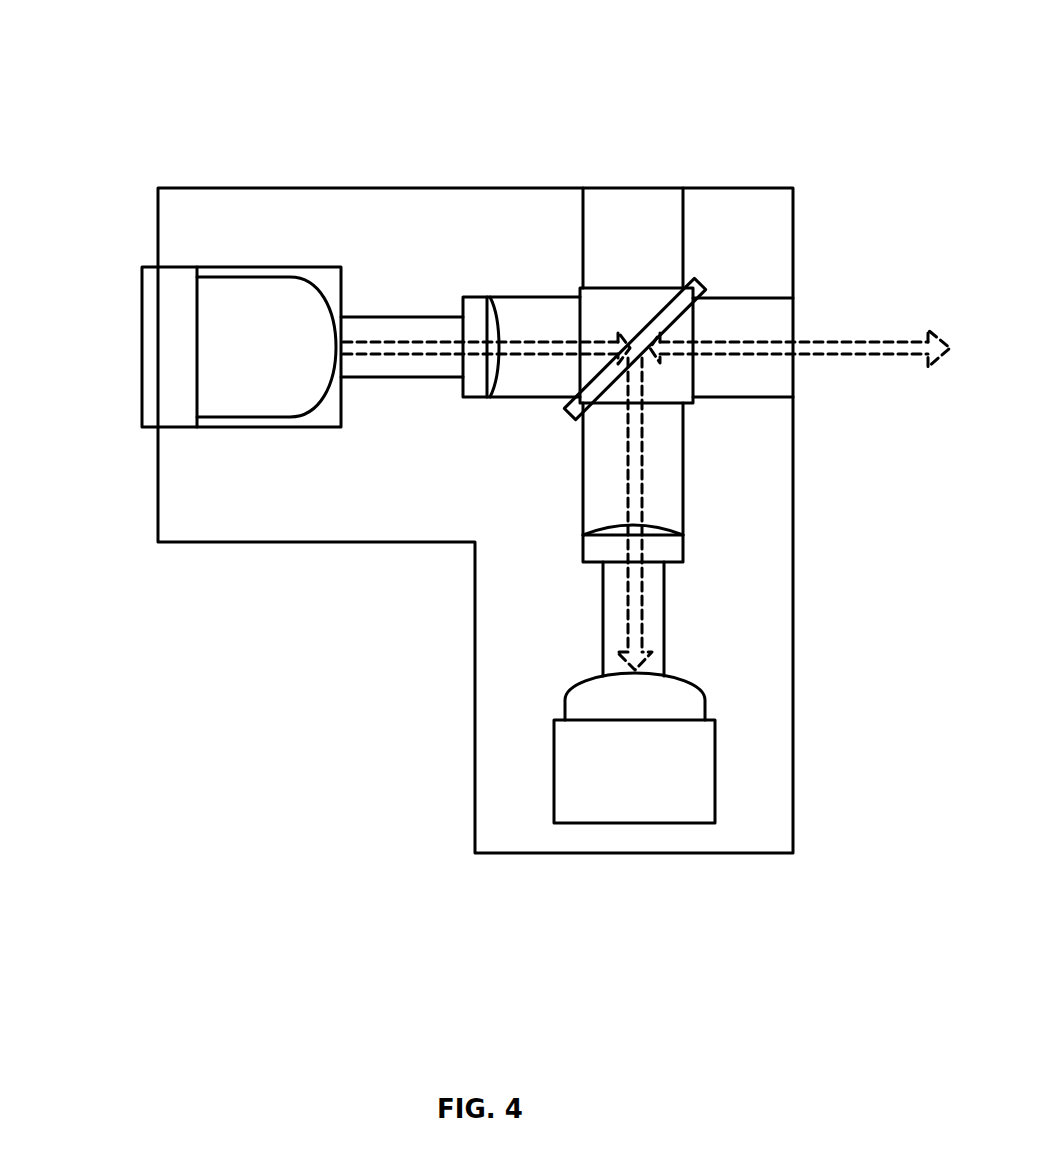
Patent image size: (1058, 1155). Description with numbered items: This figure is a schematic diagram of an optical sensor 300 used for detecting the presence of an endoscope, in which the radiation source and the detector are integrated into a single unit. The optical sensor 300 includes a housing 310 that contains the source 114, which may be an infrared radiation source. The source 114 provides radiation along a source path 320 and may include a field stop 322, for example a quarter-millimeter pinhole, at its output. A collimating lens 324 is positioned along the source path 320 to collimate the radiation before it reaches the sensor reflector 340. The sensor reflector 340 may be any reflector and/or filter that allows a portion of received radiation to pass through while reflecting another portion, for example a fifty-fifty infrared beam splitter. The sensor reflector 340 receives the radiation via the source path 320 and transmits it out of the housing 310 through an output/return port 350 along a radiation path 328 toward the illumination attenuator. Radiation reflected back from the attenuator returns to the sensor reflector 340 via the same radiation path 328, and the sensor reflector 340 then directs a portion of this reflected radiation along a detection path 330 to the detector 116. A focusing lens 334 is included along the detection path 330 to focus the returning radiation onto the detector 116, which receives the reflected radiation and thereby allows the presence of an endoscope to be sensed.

The optical sensor 300 is at (246, 63).
The housing 310 is at (183, 505).
The source 114 is at (196, 348).
The field stop 322 is at (333, 343).
The collimating lens 324 is at (475, 296).
The source path 320 is at (528, 340).
The sensor reflector 340 is at (708, 289).
The output/return port 350 is at (795, 389).
The radiation path 328 is at (877, 355).
The focusing lens 334 is at (684, 549).
The detection path 330 is at (643, 623).
The detector 116 is at (715, 771).